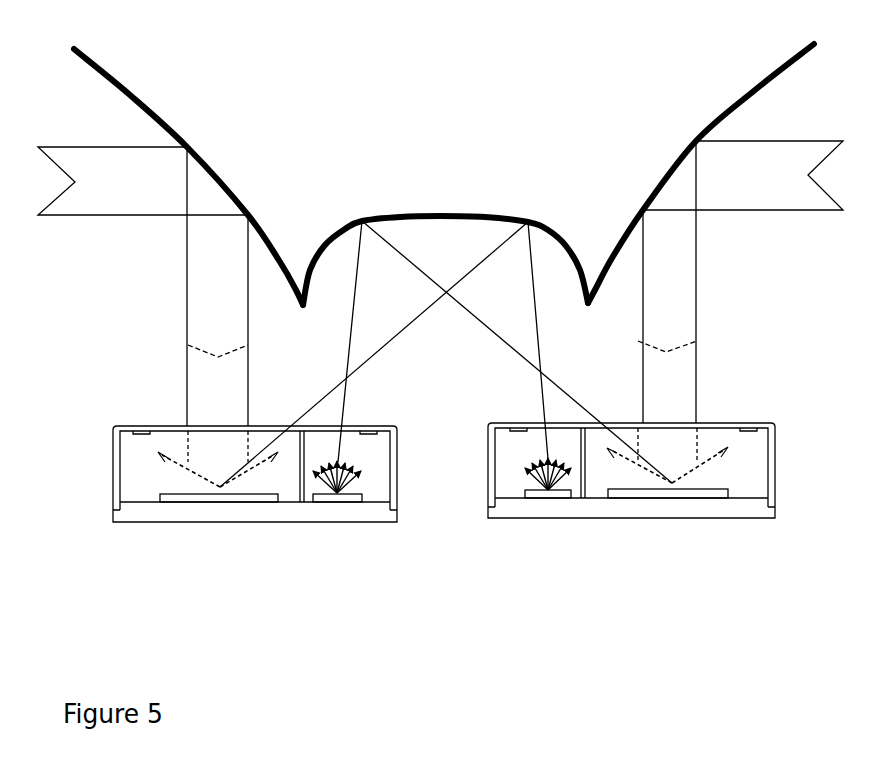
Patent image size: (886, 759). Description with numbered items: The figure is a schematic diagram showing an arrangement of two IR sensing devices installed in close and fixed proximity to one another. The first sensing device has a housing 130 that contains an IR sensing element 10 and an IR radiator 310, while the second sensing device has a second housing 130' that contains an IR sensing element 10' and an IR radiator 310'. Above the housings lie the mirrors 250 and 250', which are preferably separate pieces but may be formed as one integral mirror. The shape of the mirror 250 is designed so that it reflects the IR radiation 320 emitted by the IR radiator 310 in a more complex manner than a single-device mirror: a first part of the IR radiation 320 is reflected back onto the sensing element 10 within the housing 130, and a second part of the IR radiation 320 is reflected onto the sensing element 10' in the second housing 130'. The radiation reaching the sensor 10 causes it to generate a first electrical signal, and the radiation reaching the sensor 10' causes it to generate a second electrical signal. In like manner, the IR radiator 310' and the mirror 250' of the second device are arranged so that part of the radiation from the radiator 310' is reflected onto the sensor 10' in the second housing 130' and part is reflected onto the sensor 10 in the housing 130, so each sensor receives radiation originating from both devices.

The IR sensing element 10 is at (219, 532).
The IR sensing element 10' is at (668, 527).
The housing 130 is at (220, 443).
The second housing 130' is at (667, 447).
The mirror 250 is at (331, 177).
The mirror 250' is at (690, 173).
The IR radiator 310 is at (354, 510).
The IR radiator 310' is at (528, 512).
The IR radiation 320 is at (342, 398).